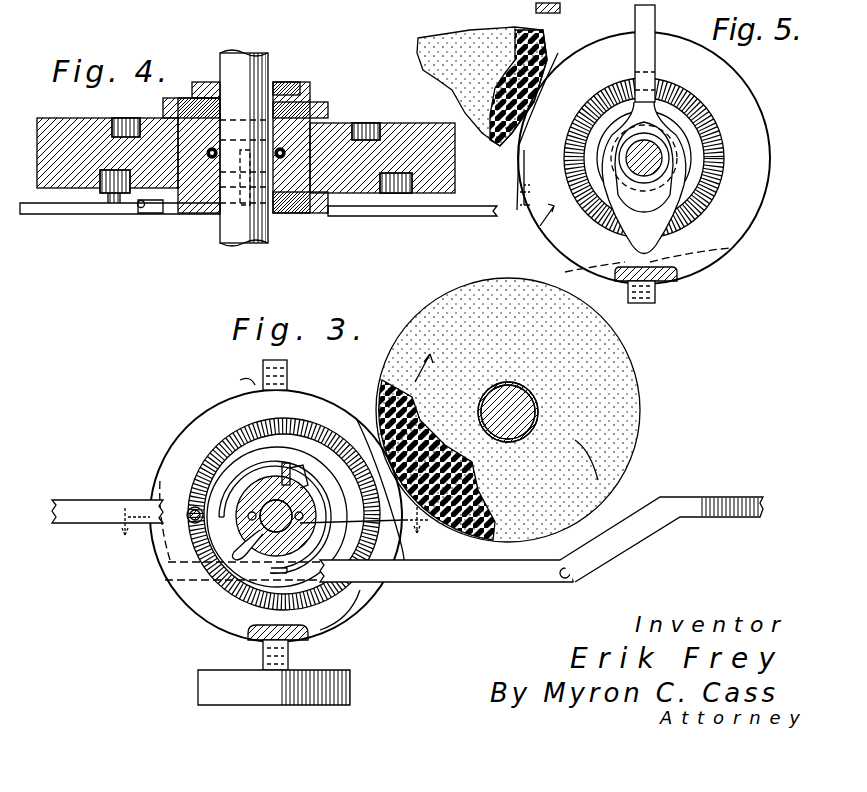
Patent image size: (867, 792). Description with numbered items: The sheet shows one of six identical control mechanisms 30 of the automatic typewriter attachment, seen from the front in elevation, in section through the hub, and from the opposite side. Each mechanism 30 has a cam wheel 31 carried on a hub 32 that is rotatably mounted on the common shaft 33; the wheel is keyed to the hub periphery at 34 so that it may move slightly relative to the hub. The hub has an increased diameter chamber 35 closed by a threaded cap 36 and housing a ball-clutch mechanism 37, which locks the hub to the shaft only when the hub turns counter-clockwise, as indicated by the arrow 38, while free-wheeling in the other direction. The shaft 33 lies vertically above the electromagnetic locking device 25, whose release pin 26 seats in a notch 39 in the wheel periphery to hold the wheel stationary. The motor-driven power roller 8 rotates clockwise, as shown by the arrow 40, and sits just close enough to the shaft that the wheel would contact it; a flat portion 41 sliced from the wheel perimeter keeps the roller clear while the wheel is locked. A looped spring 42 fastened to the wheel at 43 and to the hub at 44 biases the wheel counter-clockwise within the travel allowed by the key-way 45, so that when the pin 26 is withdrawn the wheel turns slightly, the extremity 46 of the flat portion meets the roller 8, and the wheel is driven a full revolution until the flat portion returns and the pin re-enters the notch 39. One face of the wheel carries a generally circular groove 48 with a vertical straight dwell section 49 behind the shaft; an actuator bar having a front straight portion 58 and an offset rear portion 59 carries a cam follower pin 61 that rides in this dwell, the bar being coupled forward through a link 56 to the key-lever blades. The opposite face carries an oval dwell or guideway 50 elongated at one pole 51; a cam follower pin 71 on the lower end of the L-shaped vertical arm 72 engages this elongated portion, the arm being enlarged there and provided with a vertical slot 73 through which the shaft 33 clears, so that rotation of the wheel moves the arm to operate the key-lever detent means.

In FIG. 5, the power or drive roller 8 is at (470, 44).
In FIG. 3, the power or drive roller 8 is at (615, 430).
In FIG. 3, the electromagnetic locking device 25 is at (330, 664).
In FIG. 5, the release pin 26 is at (655, 300).
In FIG. 3, the release pin 26 is at (290, 658).
In FIG. 3, the control mechanism 30 is at (179, 422).
In FIG. 4, the cam wheel 31 is at (455, 182).
In FIG. 5, the cam wheel 31 is at (720, 236).
In FIG. 3, the cam wheel 31 is at (305, 423).
In FIG. 4, the hub 32 is at (330, 124).
In FIG. 3, the hub 32 is at (240, 560).
In FIG. 4, the common shaft 33 is at (236, 53).
In FIG. 5, the common shaft 33 is at (660, 160).
In FIG. 3, the common shaft 33 is at (262, 530).
In FIG. 3, the key 34 is at (273, 462).
In FIG. 4, the increased diameter chamber 35 is at (283, 110).
In FIG. 4, the cap 36 is at (320, 102).
In FIG. 4, the ball-clutch mechanism 37 is at (190, 96).
In FIG. 3, the ball-clutch mechanism 37 is at (295, 517).
In FIG. 3, the arrow 38 is at (335, 628).
In FIG. 3, the notch 39 is at (200, 685).
In FIG. 3, the arrow 40 is at (605, 460).
In FIG. 5, the flat portion 41 is at (550, 62).
In FIG. 3, the flat portion 41 is at (358, 422).
In FIG. 4, the looped spring 42 is at (150, 213).
In FIG. 3, the looped spring 42 is at (200, 476).
In FIG. 3, the spring connection to wheel 43 is at (262, 560).
In FIG. 3, the spring connection to hub 44 is at (248, 522).
In FIG. 3, the key-way 45 is at (292, 470).
In FIG. 5, the extremity of flat portion 46 is at (520, 150).
In FIG. 3, the extremity of flat portion 46 is at (403, 523).
In FIG. 4, the circular groove 48 is at (400, 217).
In FIG. 3, the circular groove 48 is at (252, 416).
In FIG. 3, the straight dwell section 49 is at (195, 485).
In FIG. 4, the oval dwell or guideway 50 is at (120, 118).
In FIG. 5, the oval dwell or guideway 50 is at (680, 107).
In FIG. 5, the elongated pole 51 is at (677, 276).
In FIG. 3, the link 56 is at (664, 523).
In FIG. 3, the straight portion of actuator bar 58 is at (497, 582).
In FIG. 3, the offset straight portion of actuator bar 59 is at (70, 502).
In FIG. 4, the cam follower pin 61 is at (100, 204).
In FIG. 3, the cam follower pin 61 is at (188, 520).
In FIG. 5, the cam follower pin 71 is at (595, 260).
In FIG. 4, the vertical arm 72 is at (210, 86).
In FIG. 5, the vertical arm 72 is at (652, 22).
In FIG. 3, the vertical arm 72 is at (287, 380).
In FIG. 4, the vertical slot 73 is at (268, 72).
In FIG. 5, the vertical slot 73 is at (658, 205).